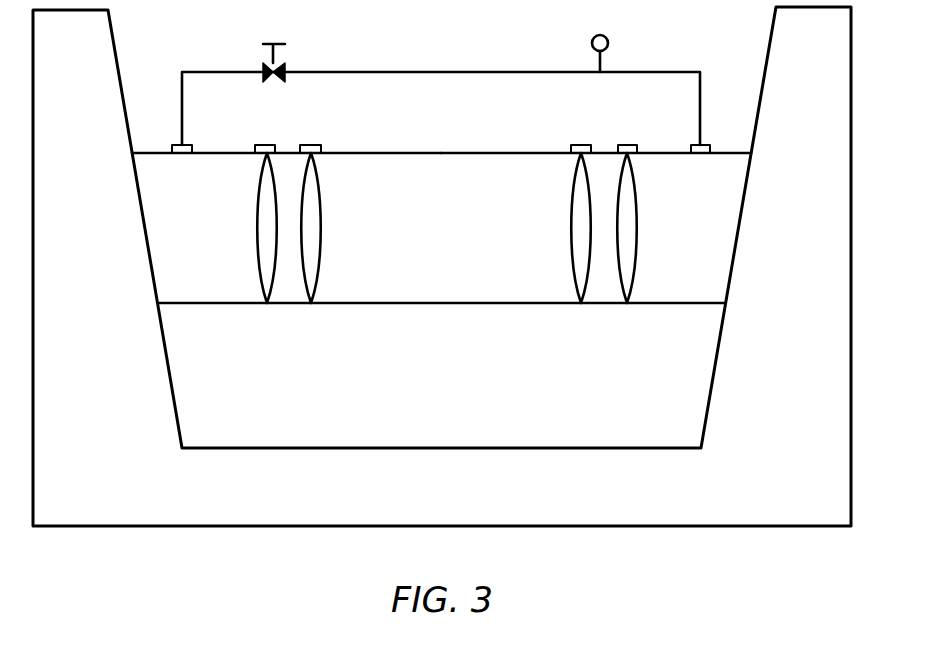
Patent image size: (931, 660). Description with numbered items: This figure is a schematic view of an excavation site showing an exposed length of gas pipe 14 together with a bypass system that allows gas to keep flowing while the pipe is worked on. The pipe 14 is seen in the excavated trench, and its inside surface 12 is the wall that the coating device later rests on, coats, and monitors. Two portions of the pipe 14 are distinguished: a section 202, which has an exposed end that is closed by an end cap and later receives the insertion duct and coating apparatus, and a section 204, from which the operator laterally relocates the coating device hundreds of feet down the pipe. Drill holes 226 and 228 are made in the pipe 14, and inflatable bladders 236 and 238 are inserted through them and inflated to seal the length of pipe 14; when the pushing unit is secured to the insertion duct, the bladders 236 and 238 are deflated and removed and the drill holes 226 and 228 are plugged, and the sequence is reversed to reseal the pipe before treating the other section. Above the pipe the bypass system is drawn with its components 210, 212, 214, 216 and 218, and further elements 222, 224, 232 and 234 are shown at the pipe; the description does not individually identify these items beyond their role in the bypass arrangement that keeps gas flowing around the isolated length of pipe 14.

The inside surface 12 is at (352, 300).
The pipe 14 is at (495, 303).
The section 202 is at (212, 312).
The section 204 is at (668, 315).
The conduit 210 is at (487, 72).
The first port 212 is at (173, 148).
The second port 214 is at (711, 148).
The sensor 216 is at (608, 43).
The valve 218 is at (278, 45).
The first opening 222 is at (256, 150).
The second opening 224 is at (323, 148).
The drill hole 226 is at (570, 148).
The drill hole 228 is at (662, 130).
The first nozzle 232 is at (257, 280).
The second nozzle 234 is at (321, 275).
The inflatable bladder 236 is at (571, 280).
The inflatable bladder 238 is at (638, 270).